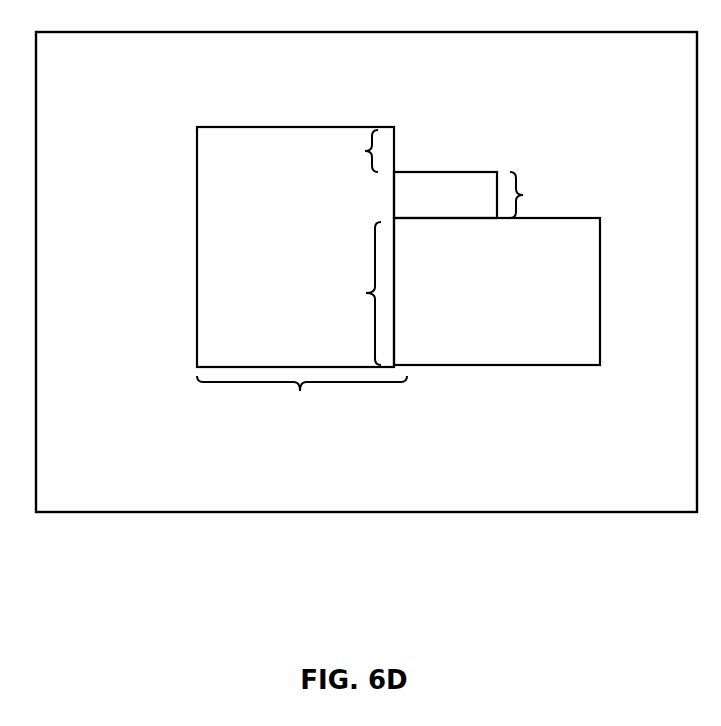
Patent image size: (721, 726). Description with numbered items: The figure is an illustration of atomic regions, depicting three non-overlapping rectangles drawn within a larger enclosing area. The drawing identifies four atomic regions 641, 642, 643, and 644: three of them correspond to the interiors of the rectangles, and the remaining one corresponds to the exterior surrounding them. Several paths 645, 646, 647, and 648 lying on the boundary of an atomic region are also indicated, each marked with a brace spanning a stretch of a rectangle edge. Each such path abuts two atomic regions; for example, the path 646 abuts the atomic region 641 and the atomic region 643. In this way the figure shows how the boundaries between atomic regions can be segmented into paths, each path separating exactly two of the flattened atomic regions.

The atomic region 641 is at (83, 258).
The atomic region 642 is at (229, 254).
The atomic region 643 is at (423, 211).
The atomic region 644 is at (475, 307).
The path 645 is at (342, 151).
The path 646 is at (543, 195).
The path 647 is at (343, 293).
The path 648 is at (302, 406).